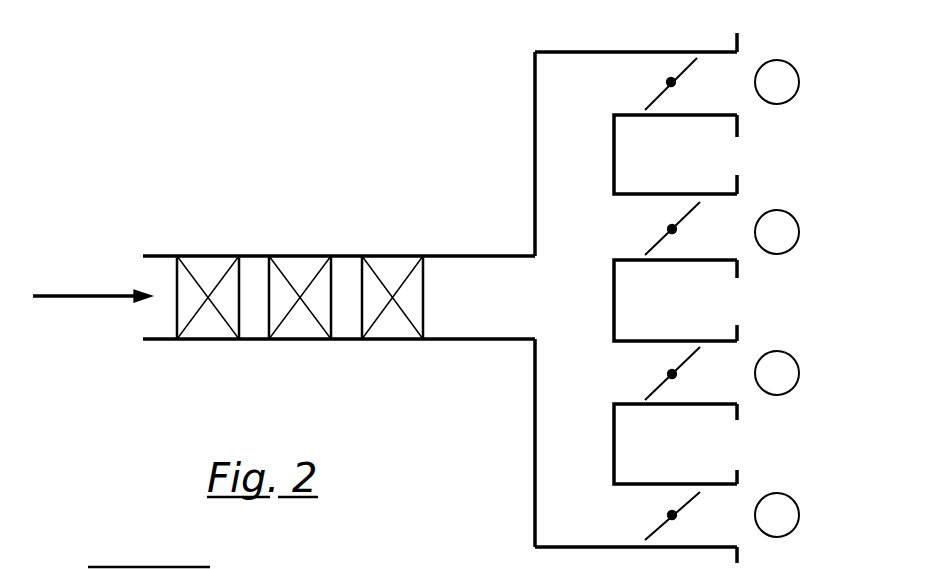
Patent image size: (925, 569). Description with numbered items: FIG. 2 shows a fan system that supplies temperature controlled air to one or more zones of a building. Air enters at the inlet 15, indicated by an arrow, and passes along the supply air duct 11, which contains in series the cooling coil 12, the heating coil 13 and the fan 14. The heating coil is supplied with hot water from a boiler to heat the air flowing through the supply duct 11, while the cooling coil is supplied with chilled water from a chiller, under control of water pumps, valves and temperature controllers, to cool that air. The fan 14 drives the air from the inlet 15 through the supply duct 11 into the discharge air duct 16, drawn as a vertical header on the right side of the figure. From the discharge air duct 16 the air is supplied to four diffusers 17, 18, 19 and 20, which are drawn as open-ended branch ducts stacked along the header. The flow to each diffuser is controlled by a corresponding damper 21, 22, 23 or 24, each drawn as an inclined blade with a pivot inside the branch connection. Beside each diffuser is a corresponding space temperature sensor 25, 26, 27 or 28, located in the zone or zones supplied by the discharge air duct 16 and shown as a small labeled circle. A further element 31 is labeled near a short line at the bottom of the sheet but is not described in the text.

The supply air duct 11 is at (478, 341).
The cooling coil 12 is at (206, 256).
The heating coil 13 is at (298, 256).
The fan 14 is at (388, 256).
The inlet 15 is at (82, 295).
The discharge air duct 16 is at (580, 314).
The diffuser 17 is at (718, 82).
The diffuser 18 is at (720, 230).
The diffuser 19 is at (720, 373).
The diffuser 20 is at (720, 517).
The damper 21 is at (676, 68).
The damper 22 is at (683, 200).
The damper 23 is at (683, 357).
The damper 24 is at (683, 498).
The space temperature sensor 25 is at (800, 80).
The space temperature sensor 26 is at (800, 230).
The space temperature sensor 27 is at (800, 371).
The space temperature sensor 28 is at (800, 513).
The controller line 31 is at (140, 566).